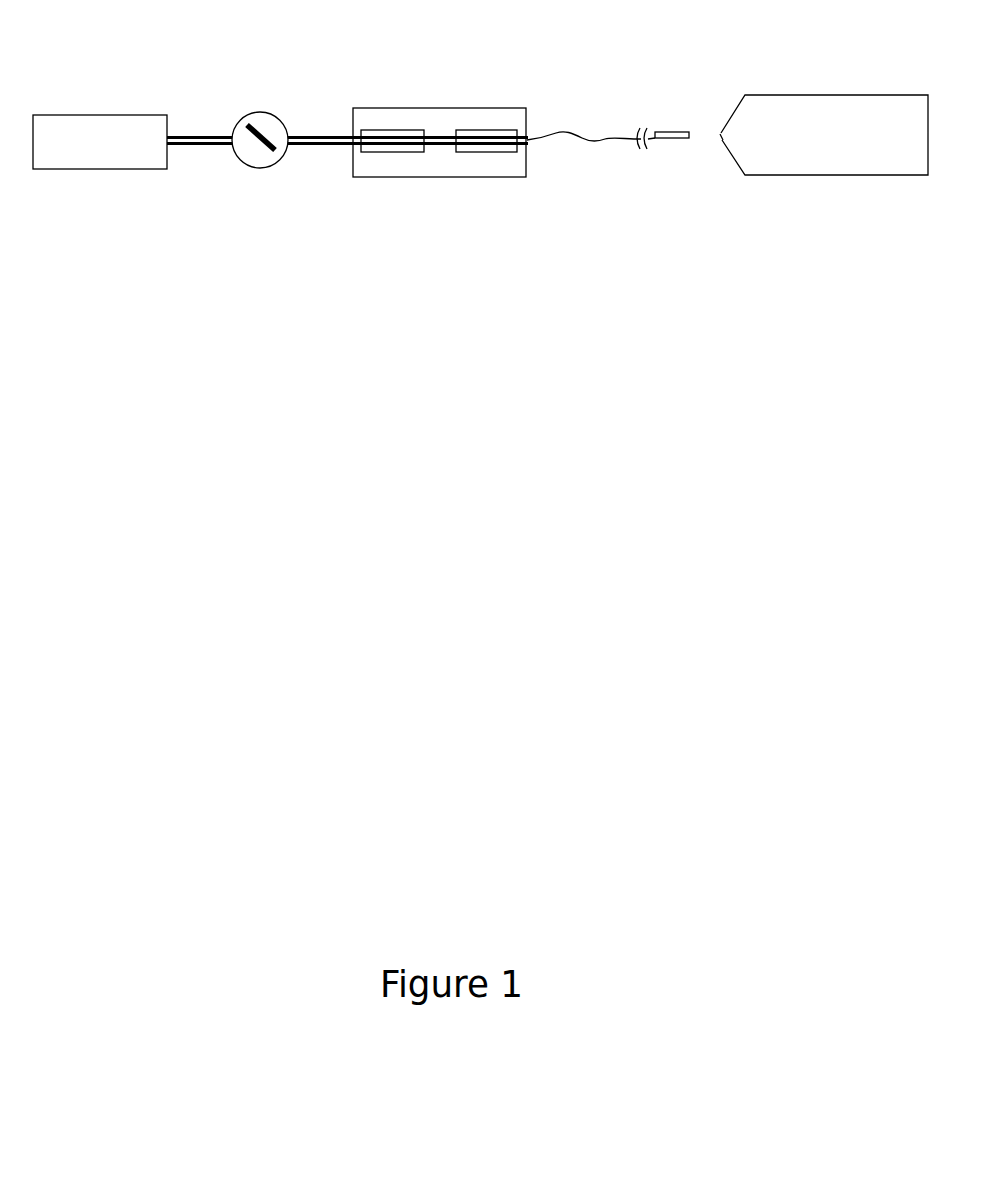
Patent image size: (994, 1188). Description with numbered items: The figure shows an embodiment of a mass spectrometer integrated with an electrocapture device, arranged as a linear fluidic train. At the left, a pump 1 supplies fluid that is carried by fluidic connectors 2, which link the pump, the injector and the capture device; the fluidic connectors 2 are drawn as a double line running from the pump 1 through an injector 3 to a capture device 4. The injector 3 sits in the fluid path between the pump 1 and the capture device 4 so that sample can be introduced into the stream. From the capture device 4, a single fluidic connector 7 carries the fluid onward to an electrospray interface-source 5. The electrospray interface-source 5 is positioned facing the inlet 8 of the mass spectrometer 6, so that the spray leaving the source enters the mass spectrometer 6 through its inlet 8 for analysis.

The pump 1 is at (85, 114).
The fluidic connectors 2 is at (306, 132).
The injector 3 is at (238, 169).
The capture device 4 is at (410, 179).
The electrospray interface-source 5 is at (672, 130).
The mass spectrometer 6 is at (810, 178).
The fluidic connector 7 is at (573, 139).
The inlet of the mass spectrometer 8 is at (716, 146).